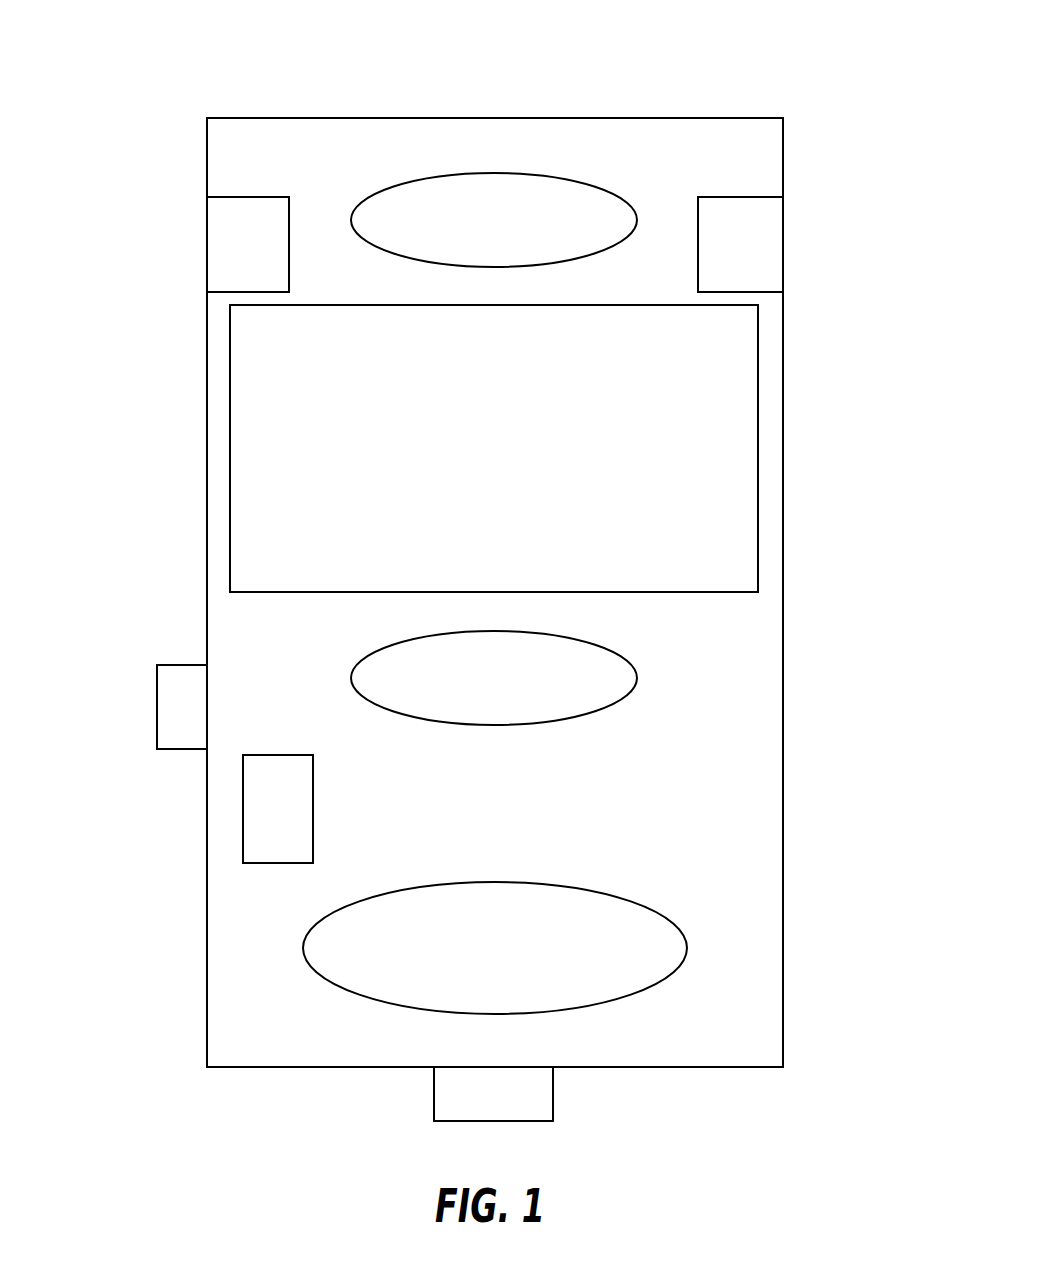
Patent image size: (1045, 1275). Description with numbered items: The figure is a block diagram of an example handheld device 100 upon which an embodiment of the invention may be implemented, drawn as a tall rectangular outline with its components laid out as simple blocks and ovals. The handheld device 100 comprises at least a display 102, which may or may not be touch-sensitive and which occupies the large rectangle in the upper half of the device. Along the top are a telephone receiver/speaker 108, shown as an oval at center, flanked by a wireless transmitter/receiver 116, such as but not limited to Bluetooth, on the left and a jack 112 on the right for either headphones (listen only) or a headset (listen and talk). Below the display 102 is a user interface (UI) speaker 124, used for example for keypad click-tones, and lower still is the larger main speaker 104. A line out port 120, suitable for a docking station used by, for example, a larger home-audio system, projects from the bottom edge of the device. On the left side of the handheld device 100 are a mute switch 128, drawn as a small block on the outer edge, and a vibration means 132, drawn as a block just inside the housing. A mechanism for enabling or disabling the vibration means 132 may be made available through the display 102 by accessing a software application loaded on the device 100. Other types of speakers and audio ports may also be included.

The handheld device 100 is at (290, 76).
The display 102 is at (709, 377).
The main speaker 104 is at (373, 953).
The telephone receiver/speaker 108 is at (505, 196).
The jack 112 is at (747, 233).
The wireless transmitter/receiver 116 is at (242, 232).
The line out port 120 is at (505, 1087).
The user interface (UI) speaker 124 is at (434, 665).
The mute switch 128 is at (170, 690).
The vibration means 132 is at (265, 822).